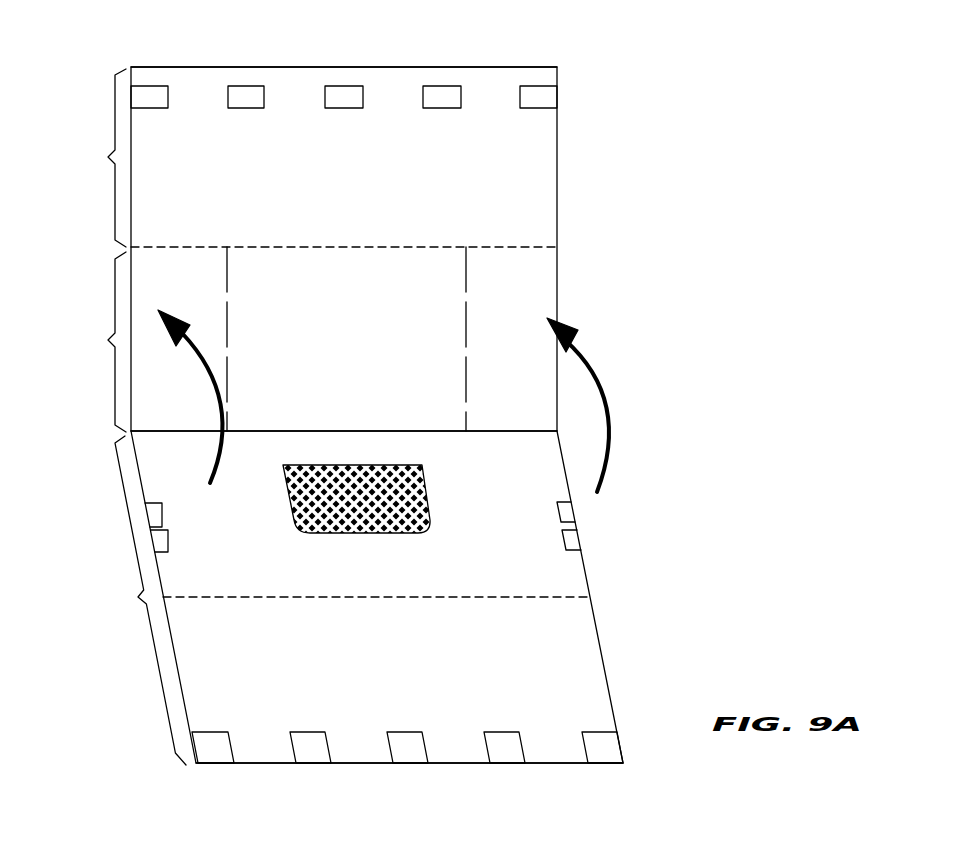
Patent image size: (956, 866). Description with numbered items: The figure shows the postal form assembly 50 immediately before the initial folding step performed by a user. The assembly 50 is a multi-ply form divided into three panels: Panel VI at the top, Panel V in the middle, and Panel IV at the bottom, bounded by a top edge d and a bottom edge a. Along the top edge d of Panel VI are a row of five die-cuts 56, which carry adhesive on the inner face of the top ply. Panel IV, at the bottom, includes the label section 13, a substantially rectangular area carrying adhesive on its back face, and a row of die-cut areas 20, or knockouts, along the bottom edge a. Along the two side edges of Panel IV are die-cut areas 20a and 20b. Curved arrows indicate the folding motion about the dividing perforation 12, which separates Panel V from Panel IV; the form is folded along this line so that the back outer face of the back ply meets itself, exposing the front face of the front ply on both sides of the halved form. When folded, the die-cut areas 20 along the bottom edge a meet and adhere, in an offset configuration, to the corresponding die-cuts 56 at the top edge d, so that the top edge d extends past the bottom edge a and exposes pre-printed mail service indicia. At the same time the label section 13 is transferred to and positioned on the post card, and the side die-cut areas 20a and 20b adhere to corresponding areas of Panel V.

The postal form assembly 50 is at (90, 107).
The dividing perforation 12 is at (532, 428).
The label section 13 is at (305, 528).
The die-cut areas 20 is at (217, 755).
The die-cut areas 20a is at (575, 512).
The die-cut areas 20b is at (155, 513).
The die-cuts 56 is at (162, 94).
The top edge d is at (160, 66).
The bottom edge a is at (380, 763).
The Panel VI is at (103, 158).
The Panel V is at (109, 342).
The Panel IV is at (144, 600).